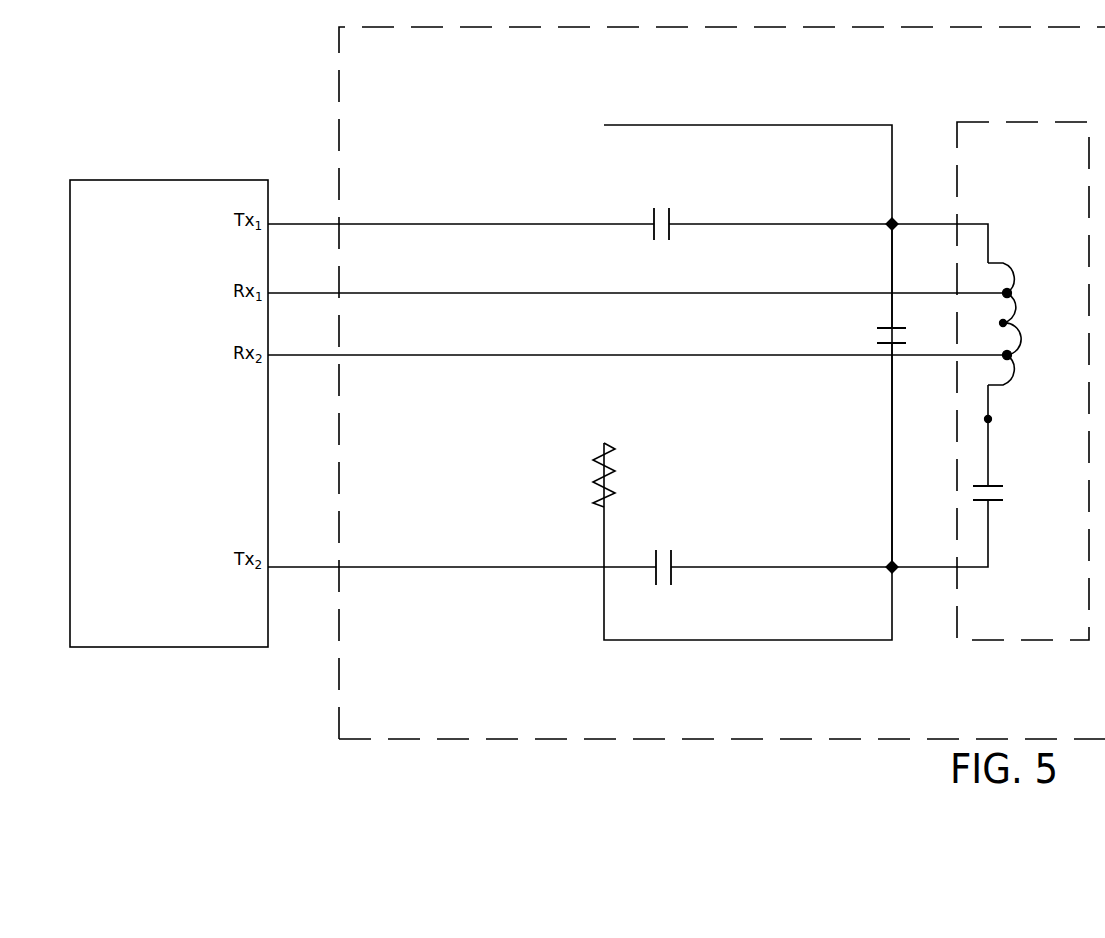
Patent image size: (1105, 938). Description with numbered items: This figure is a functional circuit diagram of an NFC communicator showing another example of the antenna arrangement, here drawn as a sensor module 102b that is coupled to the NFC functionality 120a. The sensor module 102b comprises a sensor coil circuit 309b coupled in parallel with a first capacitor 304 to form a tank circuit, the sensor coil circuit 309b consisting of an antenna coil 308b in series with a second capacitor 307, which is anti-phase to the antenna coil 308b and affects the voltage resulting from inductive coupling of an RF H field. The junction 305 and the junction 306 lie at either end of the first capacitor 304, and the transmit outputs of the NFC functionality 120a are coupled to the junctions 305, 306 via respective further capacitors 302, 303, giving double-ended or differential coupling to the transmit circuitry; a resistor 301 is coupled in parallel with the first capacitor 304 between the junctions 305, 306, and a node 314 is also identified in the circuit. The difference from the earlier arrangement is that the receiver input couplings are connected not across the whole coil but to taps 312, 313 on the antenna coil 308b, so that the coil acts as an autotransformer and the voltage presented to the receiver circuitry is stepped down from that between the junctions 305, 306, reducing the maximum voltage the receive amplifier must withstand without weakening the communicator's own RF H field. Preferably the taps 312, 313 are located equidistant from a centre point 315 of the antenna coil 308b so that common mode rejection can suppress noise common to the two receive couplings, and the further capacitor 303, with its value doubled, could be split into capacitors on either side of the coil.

The NFC functionality 120a is at (134, 181).
The sensor module 102b is at (895, 752).
The resistor 301 is at (618, 462).
The further capacitor 302 is at (662, 208).
The further capacitor 303 is at (668, 552).
The first capacitor 304 is at (872, 338).
The junction 305 is at (894, 223).
The junction 306 is at (893, 569).
The second capacitor 307 is at (1003, 495).
The antenna coil 308b is at (1010, 252).
The sensor coil circuit 309b is at (996, 650).
The tap 312 is at (1016, 283).
The tap 313 is at (1017, 363).
The node 314 is at (992, 422).
The centre point 315 is at (1015, 320).